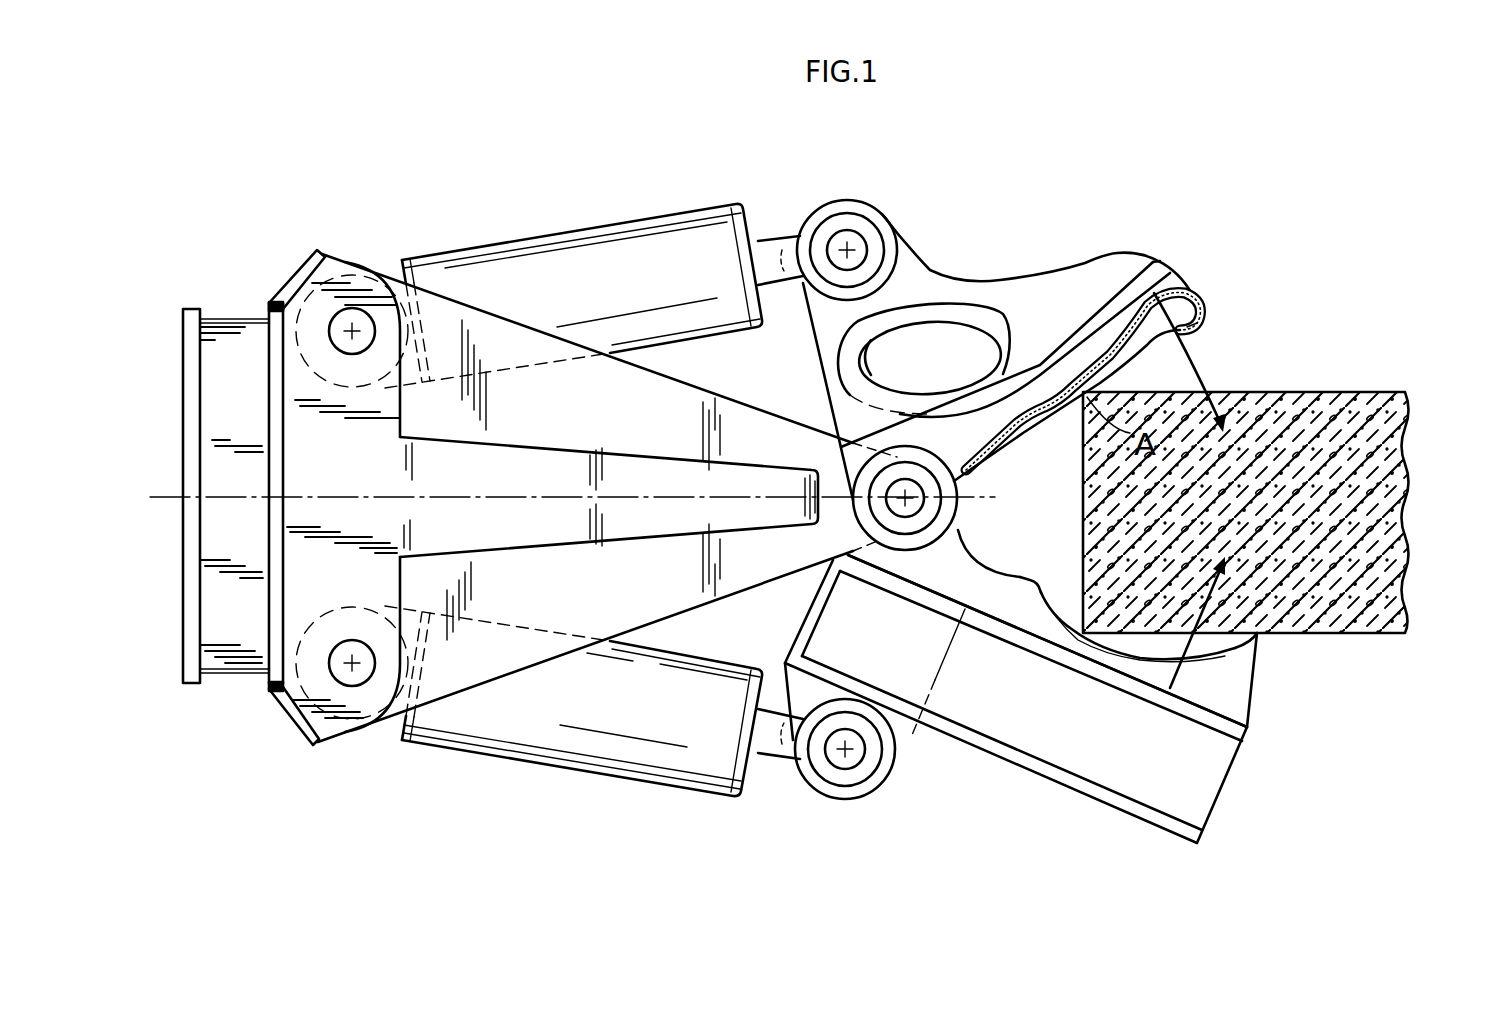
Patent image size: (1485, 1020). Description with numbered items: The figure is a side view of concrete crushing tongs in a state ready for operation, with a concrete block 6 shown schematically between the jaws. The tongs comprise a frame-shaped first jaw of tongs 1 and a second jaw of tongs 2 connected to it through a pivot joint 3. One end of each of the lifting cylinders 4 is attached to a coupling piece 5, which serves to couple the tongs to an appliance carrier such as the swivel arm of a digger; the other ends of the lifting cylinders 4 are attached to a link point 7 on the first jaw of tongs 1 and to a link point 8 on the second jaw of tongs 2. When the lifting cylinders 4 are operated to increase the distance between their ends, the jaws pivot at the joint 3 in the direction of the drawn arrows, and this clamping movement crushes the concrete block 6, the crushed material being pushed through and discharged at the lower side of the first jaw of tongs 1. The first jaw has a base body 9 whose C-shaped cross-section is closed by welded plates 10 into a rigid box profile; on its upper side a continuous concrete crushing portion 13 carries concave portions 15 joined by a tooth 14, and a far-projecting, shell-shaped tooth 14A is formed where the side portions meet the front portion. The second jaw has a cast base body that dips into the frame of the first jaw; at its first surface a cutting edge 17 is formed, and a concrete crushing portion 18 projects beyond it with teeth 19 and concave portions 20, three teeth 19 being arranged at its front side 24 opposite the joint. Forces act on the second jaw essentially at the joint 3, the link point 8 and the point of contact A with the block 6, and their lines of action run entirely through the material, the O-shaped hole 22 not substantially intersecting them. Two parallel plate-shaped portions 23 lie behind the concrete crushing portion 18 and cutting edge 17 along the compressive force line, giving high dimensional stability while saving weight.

The first jaw of tongs 1 is at (1244, 757).
The second jaw of tongs 2 is at (1113, 253).
The pivot joint 3 is at (900, 503).
The lifting cylinders 4 is at (582, 268).
The coupling piece 5 is at (351, 472).
The concrete block 6 is at (1380, 477).
The link point 7 is at (847, 753).
The link point 8 is at (850, 246).
The base body 9 is at (955, 575).
The plates 10 is at (1020, 720).
The concrete crushing portion 13 is at (1006, 562).
The tooth 14 is at (1025, 585).
The tooth 14A is at (1262, 642).
The concave portions 15 is at (1133, 652).
The cutting edge 17 is at (1107, 357).
The concrete crushing portion 18 is at (1048, 436).
The teeth 19 is at (1190, 294).
The concave portions 20 is at (1010, 450).
The hole 22 is at (877, 360).
The plate-shaped portions 23 is at (1033, 322).
The front side 24 is at (1182, 270).